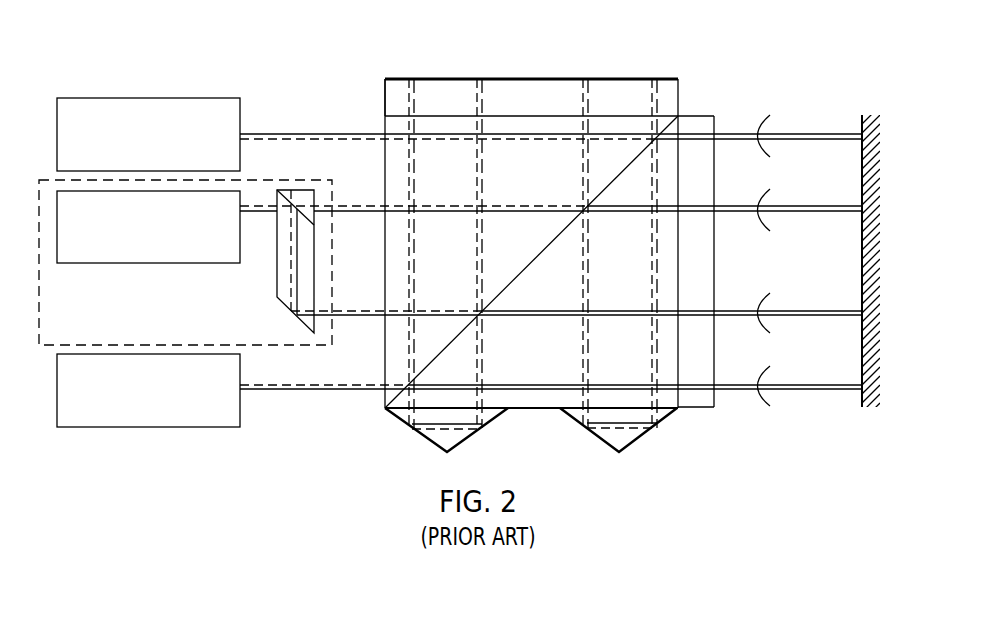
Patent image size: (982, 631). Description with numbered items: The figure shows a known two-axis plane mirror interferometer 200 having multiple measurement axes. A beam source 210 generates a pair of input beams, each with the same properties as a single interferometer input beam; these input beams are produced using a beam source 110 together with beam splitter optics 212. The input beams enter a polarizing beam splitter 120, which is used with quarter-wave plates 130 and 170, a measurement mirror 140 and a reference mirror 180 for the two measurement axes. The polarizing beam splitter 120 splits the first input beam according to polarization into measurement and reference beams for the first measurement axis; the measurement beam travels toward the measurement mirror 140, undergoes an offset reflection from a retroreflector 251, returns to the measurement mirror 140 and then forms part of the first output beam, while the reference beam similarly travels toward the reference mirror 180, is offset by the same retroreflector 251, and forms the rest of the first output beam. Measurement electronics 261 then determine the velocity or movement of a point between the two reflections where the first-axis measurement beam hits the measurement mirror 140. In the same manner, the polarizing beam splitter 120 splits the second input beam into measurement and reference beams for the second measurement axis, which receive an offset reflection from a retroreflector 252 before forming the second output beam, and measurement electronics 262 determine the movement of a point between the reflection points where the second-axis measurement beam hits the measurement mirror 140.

The two-axis interferometer 200 is at (235, 39).
The measurement electronics 261 is at (166, 164).
The measurement electronics 262 is at (166, 416).
The beam source 110 is at (166, 252).
The beam source 210 is at (114, 319).
The beam splitter optics 212 is at (277, 280).
The polarizing beam splitter 120 is at (516, 362).
The quarter-wave plate 170 is at (385, 98).
The reference mirror 180 is at (625, 79).
The quarter-wave plate 130 is at (698, 408).
The measurement mirror 140 is at (862, 405).
The retroreflector 251 is at (633, 447).
The retroreflector 252 is at (460, 447).